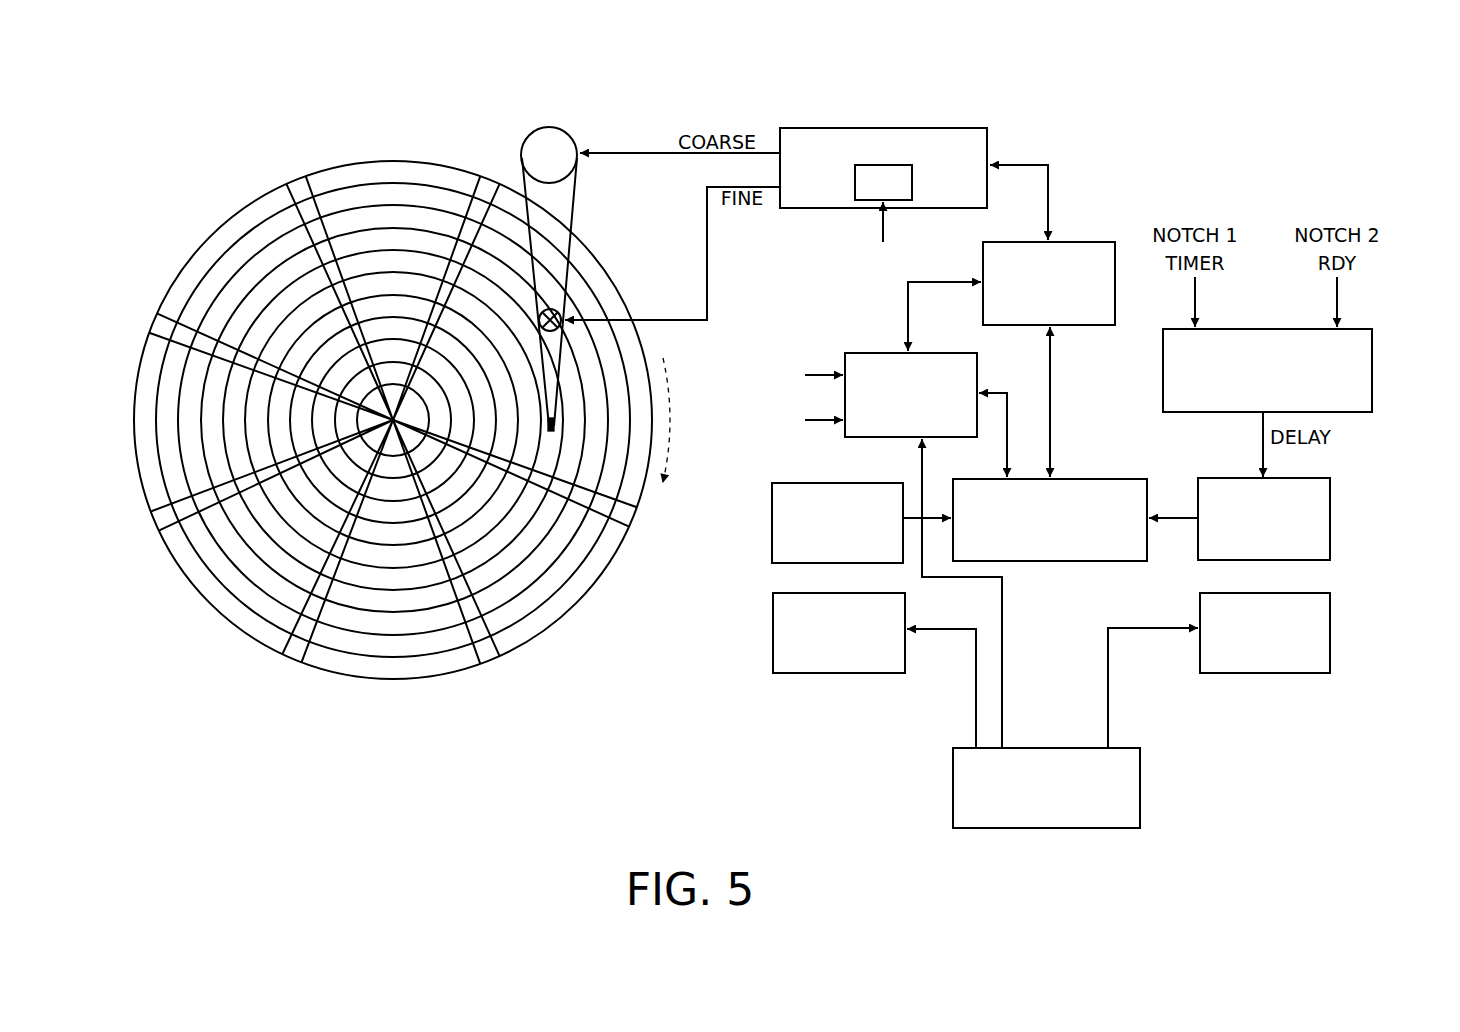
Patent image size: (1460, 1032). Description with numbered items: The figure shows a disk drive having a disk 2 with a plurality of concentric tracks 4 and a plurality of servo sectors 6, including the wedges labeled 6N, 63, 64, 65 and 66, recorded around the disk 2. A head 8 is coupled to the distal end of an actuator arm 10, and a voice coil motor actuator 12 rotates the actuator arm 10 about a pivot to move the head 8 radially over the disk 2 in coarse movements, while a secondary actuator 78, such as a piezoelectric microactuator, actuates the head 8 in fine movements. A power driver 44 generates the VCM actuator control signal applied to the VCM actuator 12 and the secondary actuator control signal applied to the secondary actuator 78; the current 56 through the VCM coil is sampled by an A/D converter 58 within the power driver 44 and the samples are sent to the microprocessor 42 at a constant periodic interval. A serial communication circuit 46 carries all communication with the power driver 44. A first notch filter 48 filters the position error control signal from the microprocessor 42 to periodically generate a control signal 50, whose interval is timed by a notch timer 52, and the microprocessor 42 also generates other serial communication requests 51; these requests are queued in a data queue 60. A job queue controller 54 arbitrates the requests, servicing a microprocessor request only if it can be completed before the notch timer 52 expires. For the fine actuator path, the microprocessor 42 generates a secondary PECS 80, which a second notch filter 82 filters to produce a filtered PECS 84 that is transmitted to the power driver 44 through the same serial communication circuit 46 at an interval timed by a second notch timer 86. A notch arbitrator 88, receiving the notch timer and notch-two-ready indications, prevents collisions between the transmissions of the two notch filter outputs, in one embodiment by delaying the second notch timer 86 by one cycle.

The disk 2 is at (186, 243).
The tracks 4 is at (388, 190).
The servo sector 6 is at (491, 178).
The servo sector 6N is at (295, 178).
The servo sector 63 is at (489, 658).
The servo sector 64 is at (293, 656).
The servo sector 65 is at (157, 519).
The servo sector 66 is at (160, 322).
The head 8 is at (556, 433).
The actuator arm 10 is at (577, 205).
The voice coil motor (VCM) actuator 12 is at (549, 127).
The secondary actuator 78 is at (551, 307).
The microprocessor 42 is at (953, 786).
The power driver 44 is at (883, 128).
The serial communication circuit 46 is at (1077, 242).
The notch filter 48 is at (773, 632).
The control signal 50 is at (819, 372).
The serial communication requests 51 is at (1002, 712).
The notch timer 52 is at (772, 514).
The job queue controller 54 is at (1086, 479).
The current 56 is at (882, 234).
The A/D converter 58 is at (854, 178).
The data queue 60 is at (882, 353).
The secondary PECS 80 is at (1108, 712).
The second notch filter 82 is at (1330, 632).
The filtered PECS 84 is at (819, 424).
The second notch timer 86 is at (1330, 520).
The notch arbitrator 88 is at (1372, 366).